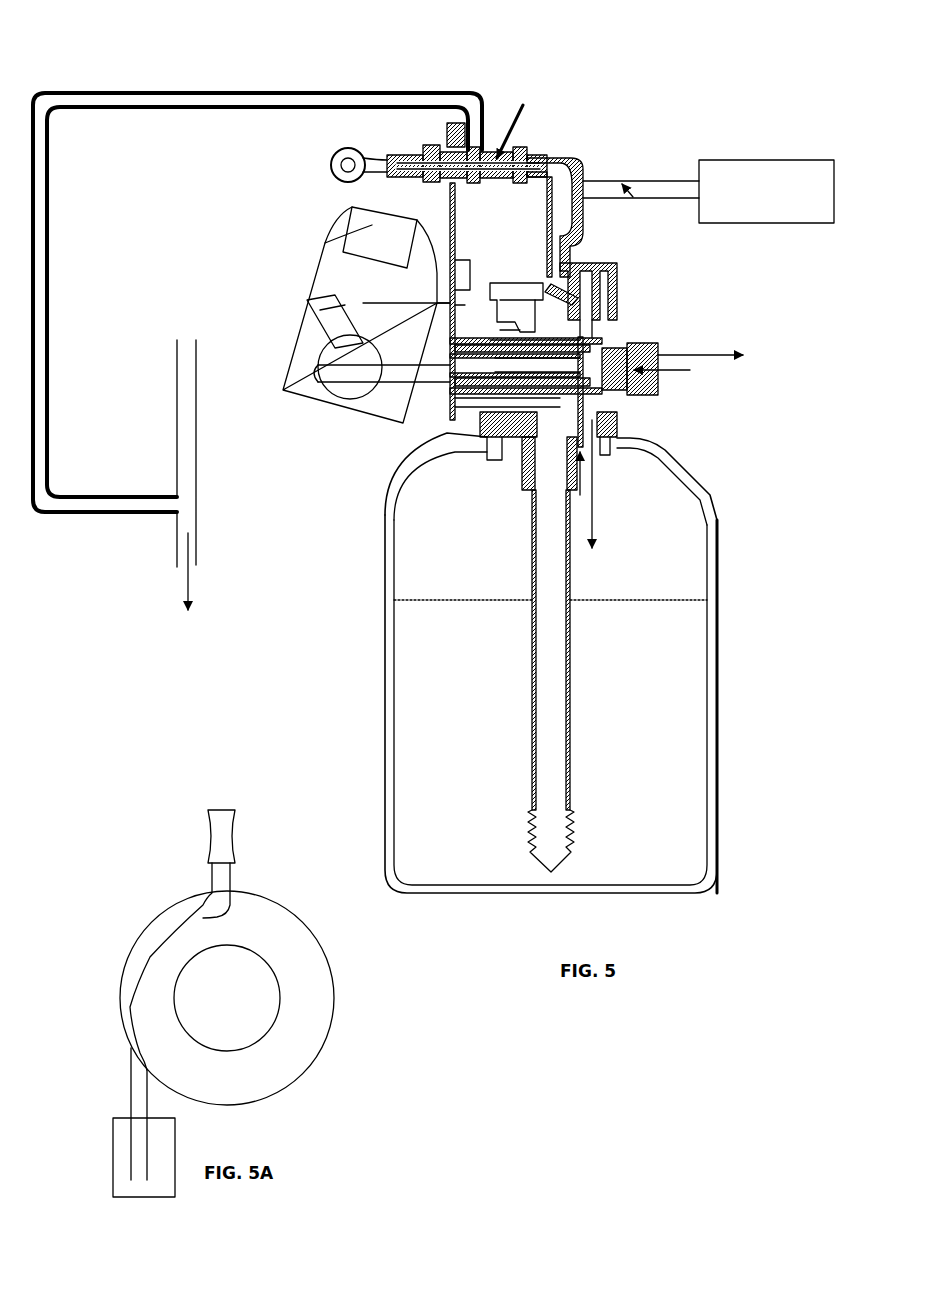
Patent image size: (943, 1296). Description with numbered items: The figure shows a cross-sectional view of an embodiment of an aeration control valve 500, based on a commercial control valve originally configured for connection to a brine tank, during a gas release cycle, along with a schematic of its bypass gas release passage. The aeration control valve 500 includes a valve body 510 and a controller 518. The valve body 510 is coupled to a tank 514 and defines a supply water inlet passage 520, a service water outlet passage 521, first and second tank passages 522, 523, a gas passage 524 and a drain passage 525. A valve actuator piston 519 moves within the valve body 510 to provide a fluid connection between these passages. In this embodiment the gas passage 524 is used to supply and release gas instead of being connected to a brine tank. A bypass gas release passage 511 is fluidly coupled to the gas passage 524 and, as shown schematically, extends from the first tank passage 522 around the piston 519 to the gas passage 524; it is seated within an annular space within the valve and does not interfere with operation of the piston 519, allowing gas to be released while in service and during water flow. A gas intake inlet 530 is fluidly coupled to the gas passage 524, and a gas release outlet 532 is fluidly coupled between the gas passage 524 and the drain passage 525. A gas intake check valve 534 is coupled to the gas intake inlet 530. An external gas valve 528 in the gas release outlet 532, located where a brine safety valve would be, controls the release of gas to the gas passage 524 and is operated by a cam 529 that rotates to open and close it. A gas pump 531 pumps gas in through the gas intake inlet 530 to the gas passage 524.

In FIG. 5, the aeration control valve 500 is at (706, 80).
In FIG. 5, the valve body 510 is at (617, 290).
In FIG. 5, the bypass gas release passage 511 is at (583, 362).
In FIG. 5A, the bypass gas release passage 511 is at (136, 1000).
In FIG. 5, the tank 514 is at (385, 575).
In FIG. 5, the controller 518 is at (307, 302).
In FIG. 5, the valve actuator piston 519 is at (493, 380).
In FIG. 5A, the valve actuator piston 519 is at (273, 1033).
In FIG. 5, the supply water inlet passage 520 is at (660, 380).
In FIG. 5, the service water outlet passage 521 is at (513, 297).
In FIG. 5, the first tank passage 522 is at (587, 445).
In FIG. 5A, the first tank passage 522 is at (120, 1140).
In FIG. 5, the second tank passage 523 is at (553, 583).
In FIG. 5, the gas passage 524 is at (575, 300).
In FIG. 5A, the gas passage 524 is at (221, 836).
In FIG. 5, the drain passage 525 is at (177, 545).
In FIG. 5, the external gas valve 528 is at (470, 130).
In FIG. 5, the cam 529 is at (338, 180).
In FIG. 5, the gas intake inlet 530 is at (686, 192).
In FIG. 5, the gas pump 531 is at (762, 172).
In FIG. 5, the gas release outlet 532 is at (327, 100).
In FIG. 5, the gas intake check valve 534 is at (625, 180).